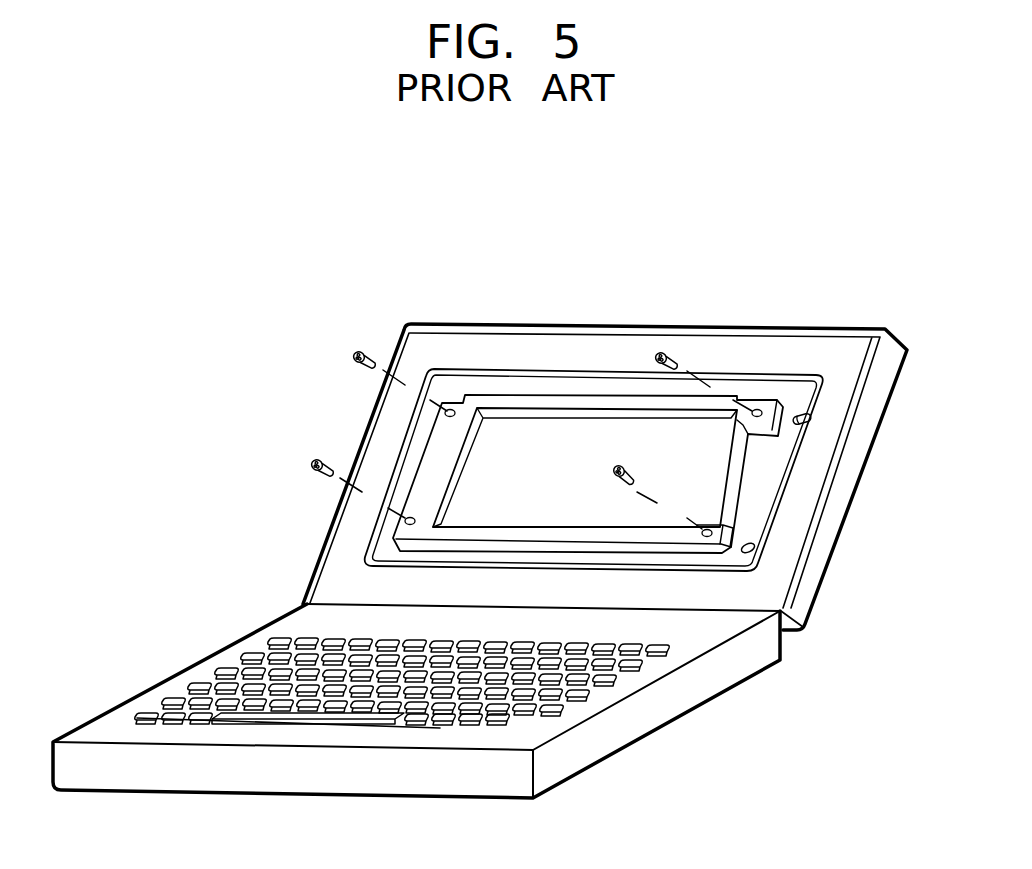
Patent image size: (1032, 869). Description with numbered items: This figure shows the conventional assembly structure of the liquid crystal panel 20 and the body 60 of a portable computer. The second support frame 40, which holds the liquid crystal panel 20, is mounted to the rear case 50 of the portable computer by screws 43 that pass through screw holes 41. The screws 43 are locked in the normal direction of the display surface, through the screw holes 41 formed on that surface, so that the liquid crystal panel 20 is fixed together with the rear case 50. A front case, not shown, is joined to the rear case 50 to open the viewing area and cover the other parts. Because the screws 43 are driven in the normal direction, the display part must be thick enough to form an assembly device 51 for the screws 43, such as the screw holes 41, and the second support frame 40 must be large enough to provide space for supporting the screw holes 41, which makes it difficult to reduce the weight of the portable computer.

The liquid crystal panel 20 is at (549, 440).
The second support frame 40 is at (508, 395).
The screw holes 41 is at (447, 407).
The screws 43 is at (318, 466).
The rear case 50 is at (646, 324).
The assembly device 51 is at (810, 422).
The body 60 is at (662, 728).